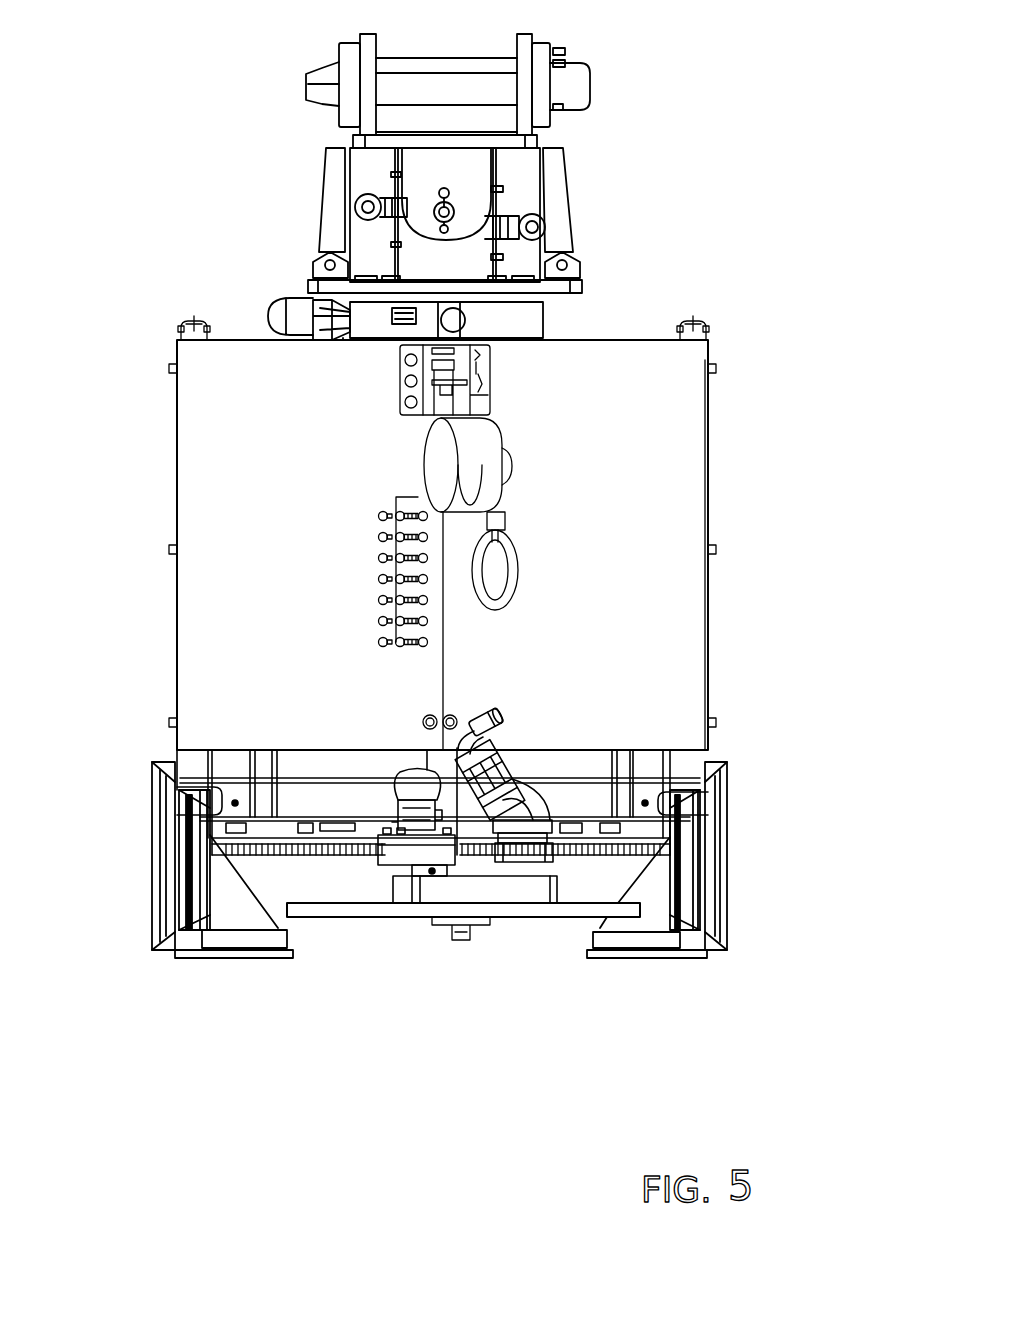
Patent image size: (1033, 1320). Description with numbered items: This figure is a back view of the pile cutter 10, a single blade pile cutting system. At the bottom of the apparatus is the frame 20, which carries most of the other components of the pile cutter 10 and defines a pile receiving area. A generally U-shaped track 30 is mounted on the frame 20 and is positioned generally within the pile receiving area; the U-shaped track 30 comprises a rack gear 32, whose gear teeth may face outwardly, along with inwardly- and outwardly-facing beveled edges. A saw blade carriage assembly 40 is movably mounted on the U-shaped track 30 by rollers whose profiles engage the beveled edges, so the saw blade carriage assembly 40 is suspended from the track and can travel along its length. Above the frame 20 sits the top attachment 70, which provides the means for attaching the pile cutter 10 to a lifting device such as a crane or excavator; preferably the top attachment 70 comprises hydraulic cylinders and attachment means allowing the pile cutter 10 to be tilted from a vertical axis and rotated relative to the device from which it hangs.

The pile cutter 10 is at (789, 213).
The frame 20 is at (70, 743).
The U-shaped track 30 is at (266, 885).
The rack gear 32 is at (362, 893).
The saw blade carriage assembly 40 is at (500, 980).
The top attachment 70 is at (658, 78).